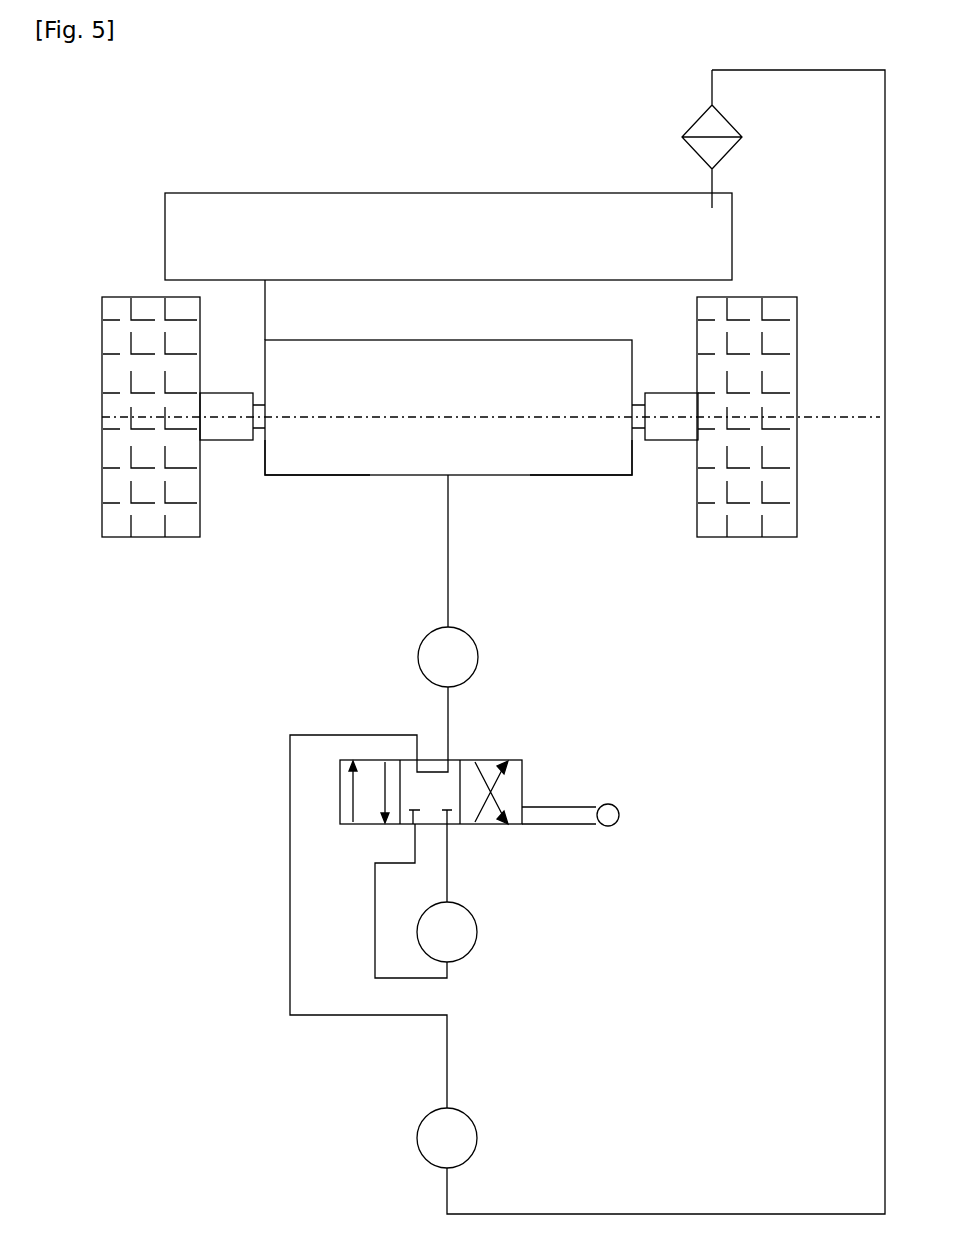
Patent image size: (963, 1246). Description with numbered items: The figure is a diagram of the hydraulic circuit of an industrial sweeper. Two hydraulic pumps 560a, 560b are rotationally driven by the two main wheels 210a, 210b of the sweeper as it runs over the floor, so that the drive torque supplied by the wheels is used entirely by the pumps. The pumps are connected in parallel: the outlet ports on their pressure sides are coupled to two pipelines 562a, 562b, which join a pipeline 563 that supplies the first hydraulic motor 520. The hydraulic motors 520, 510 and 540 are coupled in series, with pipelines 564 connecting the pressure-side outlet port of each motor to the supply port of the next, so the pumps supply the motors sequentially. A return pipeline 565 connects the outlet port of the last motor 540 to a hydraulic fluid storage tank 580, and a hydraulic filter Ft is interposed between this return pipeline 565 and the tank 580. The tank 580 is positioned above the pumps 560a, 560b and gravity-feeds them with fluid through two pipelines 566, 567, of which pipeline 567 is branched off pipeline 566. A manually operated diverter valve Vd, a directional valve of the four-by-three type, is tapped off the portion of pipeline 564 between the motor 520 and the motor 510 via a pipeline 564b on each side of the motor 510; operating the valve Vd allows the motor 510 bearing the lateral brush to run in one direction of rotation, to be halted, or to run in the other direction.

The main wheel 210a is at (145, 335).
The main wheel 210b is at (743, 340).
The hydraulic fluid storage tank 580 is at (355, 192).
The pipeline 566 is at (263, 317).
The pipeline 567 is at (507, 340).
The hydraulic filter Ft is at (705, 130).
The hydraulic pump 560a is at (232, 440).
The hydraulic pump 560b is at (663, 425).
The pipeline 562a is at (368, 475).
The pipeline 562b is at (538, 475).
The pipeline 563 is at (452, 532).
The pipeline 564 is at (450, 717).
The pipeline 564b is at (448, 863).
The return pipeline 565 is at (883, 687).
The hydraulic motor 520 is at (448, 657).
The hydraulic motor 510 is at (447, 932).
The hydraulic motor 540 is at (447, 1138).
The diverter valve Vd is at (525, 758).